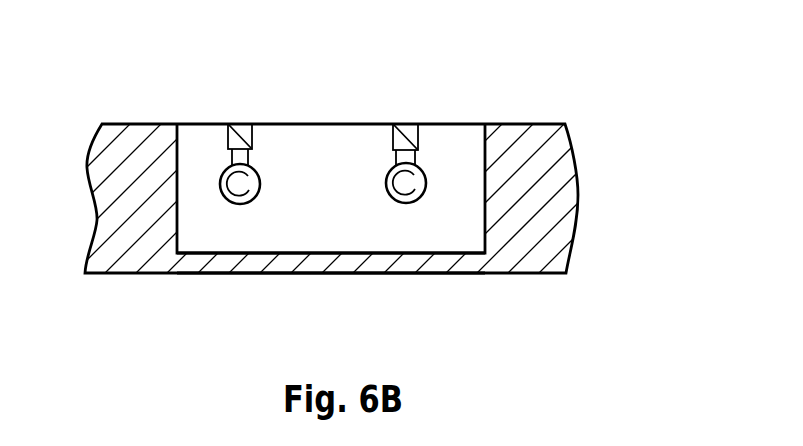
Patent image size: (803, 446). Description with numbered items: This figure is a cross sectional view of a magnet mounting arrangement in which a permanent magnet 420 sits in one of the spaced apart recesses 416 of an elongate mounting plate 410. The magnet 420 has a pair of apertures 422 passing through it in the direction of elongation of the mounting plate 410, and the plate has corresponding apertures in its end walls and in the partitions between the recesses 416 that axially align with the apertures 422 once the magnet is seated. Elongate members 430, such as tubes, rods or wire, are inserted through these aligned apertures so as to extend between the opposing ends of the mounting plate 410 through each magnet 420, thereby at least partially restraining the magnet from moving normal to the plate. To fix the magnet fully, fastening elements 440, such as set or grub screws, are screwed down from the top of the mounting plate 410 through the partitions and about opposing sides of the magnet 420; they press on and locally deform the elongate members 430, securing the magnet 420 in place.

The mounting plate 410 is at (557, 207).
The recess 416 is at (340, 256).
The permanent magnet 420 is at (330, 172).
The aperture 422 is at (222, 178).
The elongate member 430 is at (238, 188).
The fastening element 440 is at (230, 140).